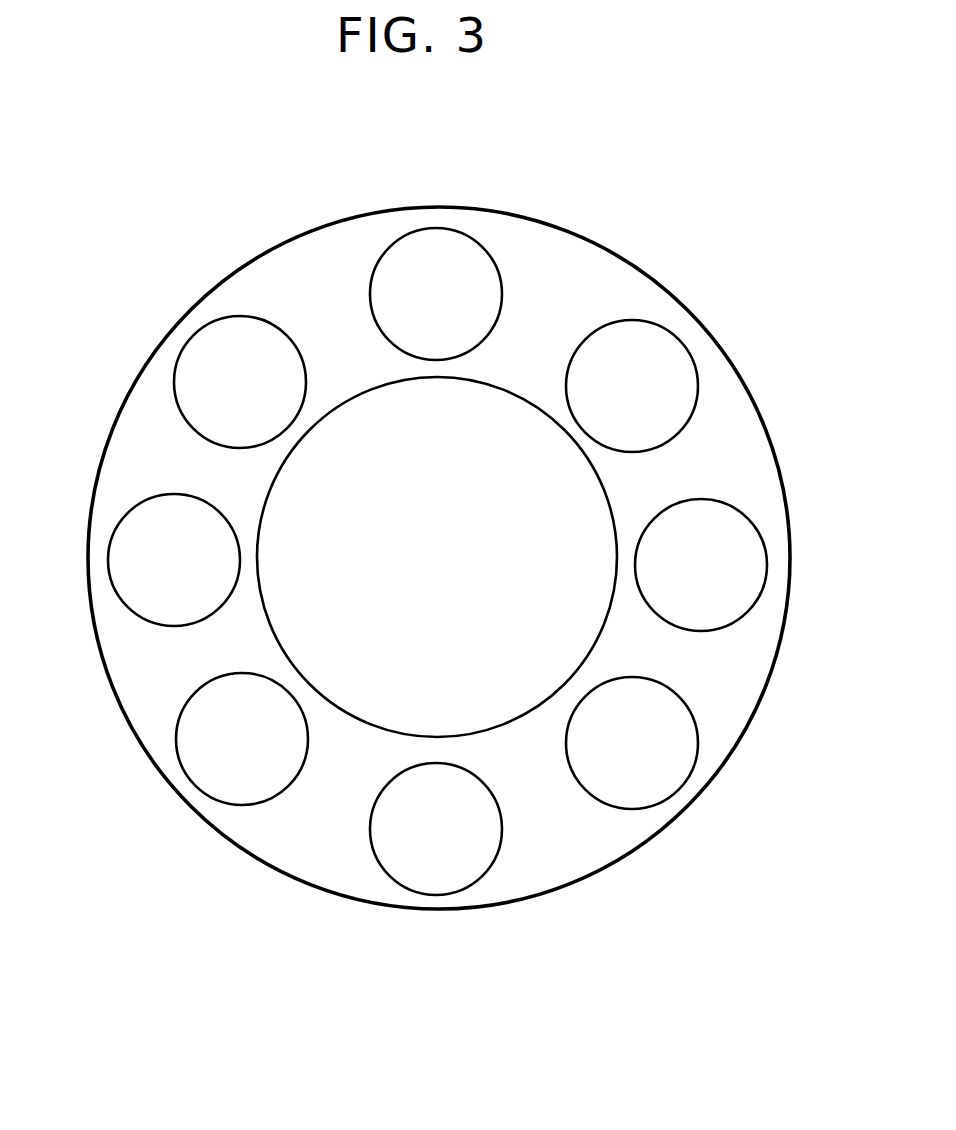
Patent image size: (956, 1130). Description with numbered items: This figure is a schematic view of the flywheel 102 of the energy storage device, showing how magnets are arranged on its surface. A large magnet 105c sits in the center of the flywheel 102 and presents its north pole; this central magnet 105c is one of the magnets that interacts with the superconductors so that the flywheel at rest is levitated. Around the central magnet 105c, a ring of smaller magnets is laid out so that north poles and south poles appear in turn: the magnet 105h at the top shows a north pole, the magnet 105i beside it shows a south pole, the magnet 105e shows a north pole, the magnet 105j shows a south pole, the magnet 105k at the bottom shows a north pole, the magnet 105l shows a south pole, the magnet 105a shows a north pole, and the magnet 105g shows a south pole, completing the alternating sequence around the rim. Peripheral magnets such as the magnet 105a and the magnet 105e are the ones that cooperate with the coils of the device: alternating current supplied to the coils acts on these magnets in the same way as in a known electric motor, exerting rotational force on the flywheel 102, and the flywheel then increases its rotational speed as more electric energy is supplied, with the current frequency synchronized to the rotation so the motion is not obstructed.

The flywheel 102 is at (752, 717).
The magnet 105a is at (128, 610).
The magnet 105c is at (512, 392).
The magnet 105e is at (745, 617).
The magnet 105g is at (197, 338).
The magnet 105h is at (432, 228).
The magnet 105i is at (690, 355).
The magnet 105j is at (680, 790).
The magnet 105k is at (475, 883).
The magnet 105l is at (193, 786).